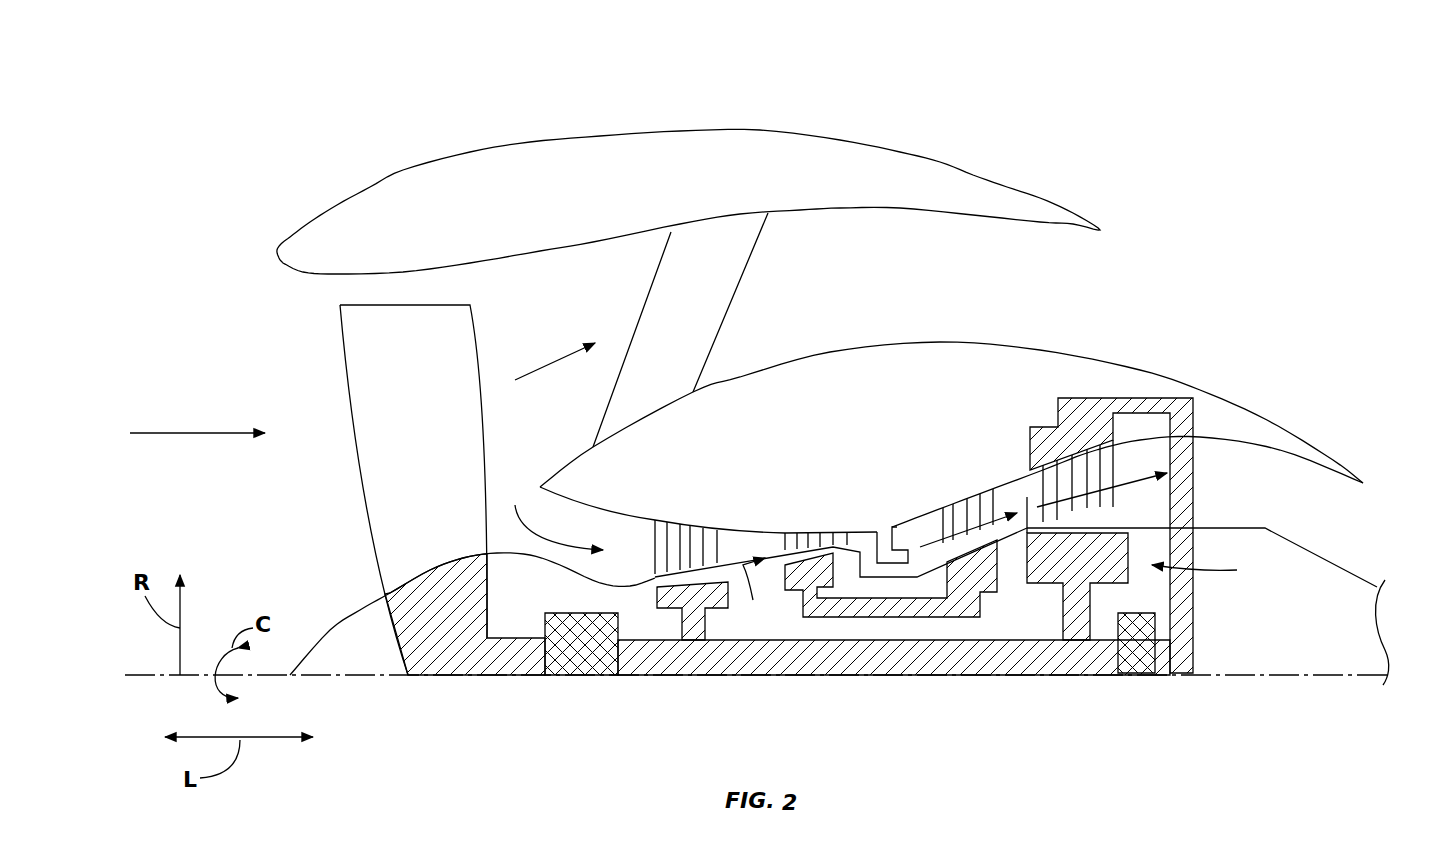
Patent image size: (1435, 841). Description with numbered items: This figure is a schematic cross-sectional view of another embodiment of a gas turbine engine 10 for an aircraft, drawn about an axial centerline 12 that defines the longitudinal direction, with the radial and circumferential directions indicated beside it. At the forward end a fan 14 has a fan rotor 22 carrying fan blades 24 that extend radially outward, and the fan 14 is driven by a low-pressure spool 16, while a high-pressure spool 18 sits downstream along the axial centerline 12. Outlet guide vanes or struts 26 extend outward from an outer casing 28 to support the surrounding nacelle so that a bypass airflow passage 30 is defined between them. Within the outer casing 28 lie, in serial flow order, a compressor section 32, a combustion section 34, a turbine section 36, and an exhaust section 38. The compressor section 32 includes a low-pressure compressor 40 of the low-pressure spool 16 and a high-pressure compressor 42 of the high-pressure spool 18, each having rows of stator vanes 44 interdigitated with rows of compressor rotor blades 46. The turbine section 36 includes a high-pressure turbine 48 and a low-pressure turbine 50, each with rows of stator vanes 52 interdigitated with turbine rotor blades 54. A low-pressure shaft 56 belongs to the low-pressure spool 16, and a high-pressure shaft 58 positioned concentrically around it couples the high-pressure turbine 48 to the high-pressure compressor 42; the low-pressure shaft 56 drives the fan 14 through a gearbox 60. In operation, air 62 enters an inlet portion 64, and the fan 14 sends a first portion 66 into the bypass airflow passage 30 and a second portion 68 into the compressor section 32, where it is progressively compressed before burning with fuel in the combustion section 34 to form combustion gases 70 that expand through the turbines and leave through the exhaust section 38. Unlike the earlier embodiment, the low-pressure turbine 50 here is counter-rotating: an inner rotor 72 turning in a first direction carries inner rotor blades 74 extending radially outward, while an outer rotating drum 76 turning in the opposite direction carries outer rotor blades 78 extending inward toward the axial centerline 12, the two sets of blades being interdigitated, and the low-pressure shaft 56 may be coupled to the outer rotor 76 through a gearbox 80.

The gas turbine engine 10 is at (222, 138).
The axial centerline 12 is at (1270, 676).
The fan 14 is at (304, 395).
The low-pressure spool 16 is at (955, 713).
The high-pressure spool 18 is at (403, 170).
The fan rotor 22 is at (362, 610).
The fan blades 24 is at (352, 437).
The outlet guide vanes or struts 26 is at (752, 272).
The outer casing 28 is at (1062, 350).
The bypass airflow passage 30 is at (809, 318).
The compressor section 32 is at (750, 505).
The combustion section 34 is at (895, 512).
The turbine section 36 is at (995, 425).
The exhaust section 38 is at (1365, 522).
The low-pressure compressor 40 is at (700, 510).
The high-pressure compressor 42 is at (810, 505).
The stator vanes 44 is at (655, 525).
The compressor rotor blades 46 is at (657, 575).
The high-pressure turbine 48 is at (965, 470).
The low-pressure turbine 50 is at (1015, 425).
The stator vanes 52 is at (955, 510).
The turbine rotor blades 54 is at (1005, 548).
The low-pressure shaft 56 is at (1213, 571).
The high-pressure shaft 58 is at (850, 620).
The gearbox 60 is at (583, 660).
The air 62 is at (188, 433).
The inlet portion 64 is at (282, 312).
The first portion of the air 66 is at (556, 358).
The second portion of the air 68 is at (516, 500).
The combustion gases 70 is at (935, 540).
The inner rotor 72 is at (1115, 588).
The inner rotor blades 74 is at (1113, 463).
The outer rotating drum 76 is at (1042, 420).
The outer rotor blades 78 is at (1022, 492).
The gearbox 80 is at (1138, 660).